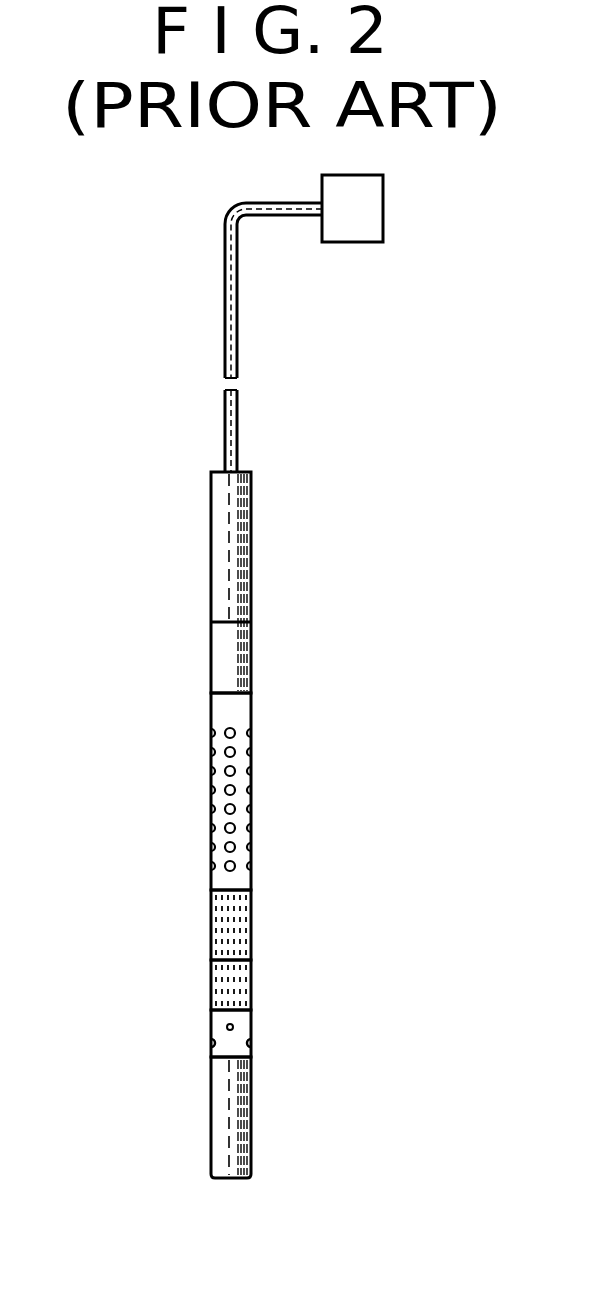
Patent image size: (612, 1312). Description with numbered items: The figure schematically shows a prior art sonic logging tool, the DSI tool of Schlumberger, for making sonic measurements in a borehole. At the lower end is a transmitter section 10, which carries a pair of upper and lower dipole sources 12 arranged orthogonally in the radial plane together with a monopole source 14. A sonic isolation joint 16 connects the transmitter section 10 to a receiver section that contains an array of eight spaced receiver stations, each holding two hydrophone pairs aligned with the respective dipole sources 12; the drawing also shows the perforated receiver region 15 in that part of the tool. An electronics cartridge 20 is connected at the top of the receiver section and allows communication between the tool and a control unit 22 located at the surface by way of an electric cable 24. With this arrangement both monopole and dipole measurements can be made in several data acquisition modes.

The transmitter section 10 is at (256, 1080).
The dipole sources 12 is at (251, 1035).
The monopole source 14 is at (251, 988).
The perforated (vented) section 15 is at (258, 808).
The sonic isolation joint 16 is at (251, 930).
The electronics cartridge 20 is at (251, 550).
The control unit 22 is at (383, 212).
The electric cable 24 is at (237, 323).